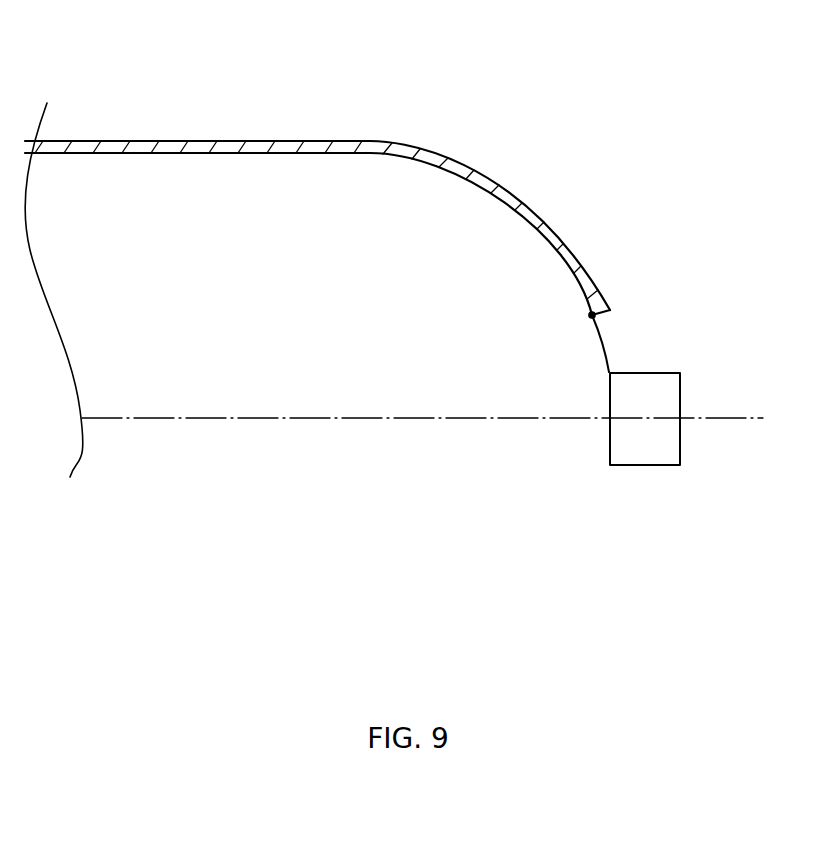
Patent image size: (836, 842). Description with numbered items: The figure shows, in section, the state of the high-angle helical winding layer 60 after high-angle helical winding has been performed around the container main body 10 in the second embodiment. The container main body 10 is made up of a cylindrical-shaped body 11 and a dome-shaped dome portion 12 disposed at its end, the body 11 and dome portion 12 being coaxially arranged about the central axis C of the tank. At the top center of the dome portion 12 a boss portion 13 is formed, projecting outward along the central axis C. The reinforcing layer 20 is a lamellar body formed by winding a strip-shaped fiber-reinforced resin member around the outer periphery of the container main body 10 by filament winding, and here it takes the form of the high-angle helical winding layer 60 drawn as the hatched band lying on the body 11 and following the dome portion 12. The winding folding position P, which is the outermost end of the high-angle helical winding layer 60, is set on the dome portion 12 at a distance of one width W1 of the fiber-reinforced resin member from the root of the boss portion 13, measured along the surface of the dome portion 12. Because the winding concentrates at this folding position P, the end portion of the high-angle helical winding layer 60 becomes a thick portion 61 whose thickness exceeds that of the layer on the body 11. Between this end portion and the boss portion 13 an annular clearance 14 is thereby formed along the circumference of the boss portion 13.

The reinforcing layer 20 is at (178, 140).
The high-angle helical winding layer 60 is at (253, 148).
The thick portion 61 is at (593, 291).
The container main body 10 is at (348, 171).
The body 11 is at (372, 139).
The dome portion 12 is at (473, 172).
The boss portion 13 is at (642, 452).
The annular clearance 14 is at (613, 345).
The winding folding position P is at (588, 315).
The width of the fiber-reinforced resin member W1 is at (608, 373).
The central axis C is at (732, 419).